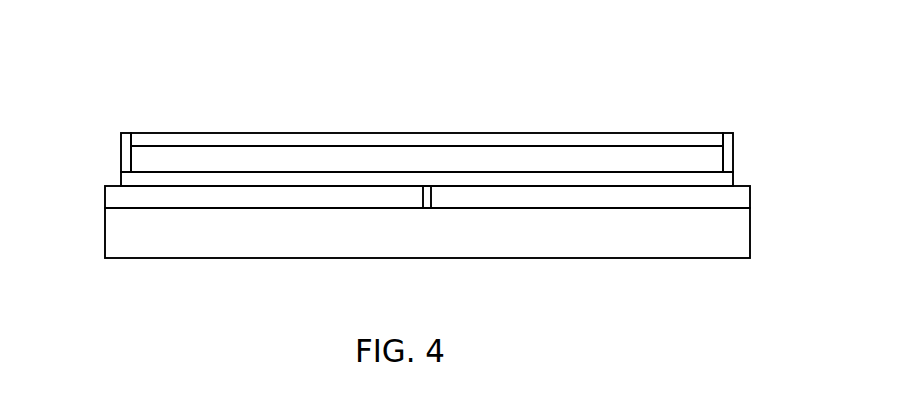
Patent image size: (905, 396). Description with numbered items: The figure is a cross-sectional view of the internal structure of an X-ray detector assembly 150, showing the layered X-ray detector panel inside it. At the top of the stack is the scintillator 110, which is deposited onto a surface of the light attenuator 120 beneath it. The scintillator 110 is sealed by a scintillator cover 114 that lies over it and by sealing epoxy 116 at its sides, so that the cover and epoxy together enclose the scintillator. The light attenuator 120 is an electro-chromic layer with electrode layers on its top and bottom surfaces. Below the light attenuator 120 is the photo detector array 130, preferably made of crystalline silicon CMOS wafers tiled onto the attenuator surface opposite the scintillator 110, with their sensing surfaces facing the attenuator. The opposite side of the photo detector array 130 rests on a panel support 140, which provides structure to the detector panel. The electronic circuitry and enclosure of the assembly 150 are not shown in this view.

The X-ray detector assembly 150 is at (150, 85).
The panel support 140 is at (750, 243).
The photo detector array 130 is at (750, 203).
The light attenuator 120 is at (735, 177).
The scintillator 110 is at (715, 160).
The sealing epoxy 116 is at (120, 150).
The scintillator cover 114 is at (603, 133).